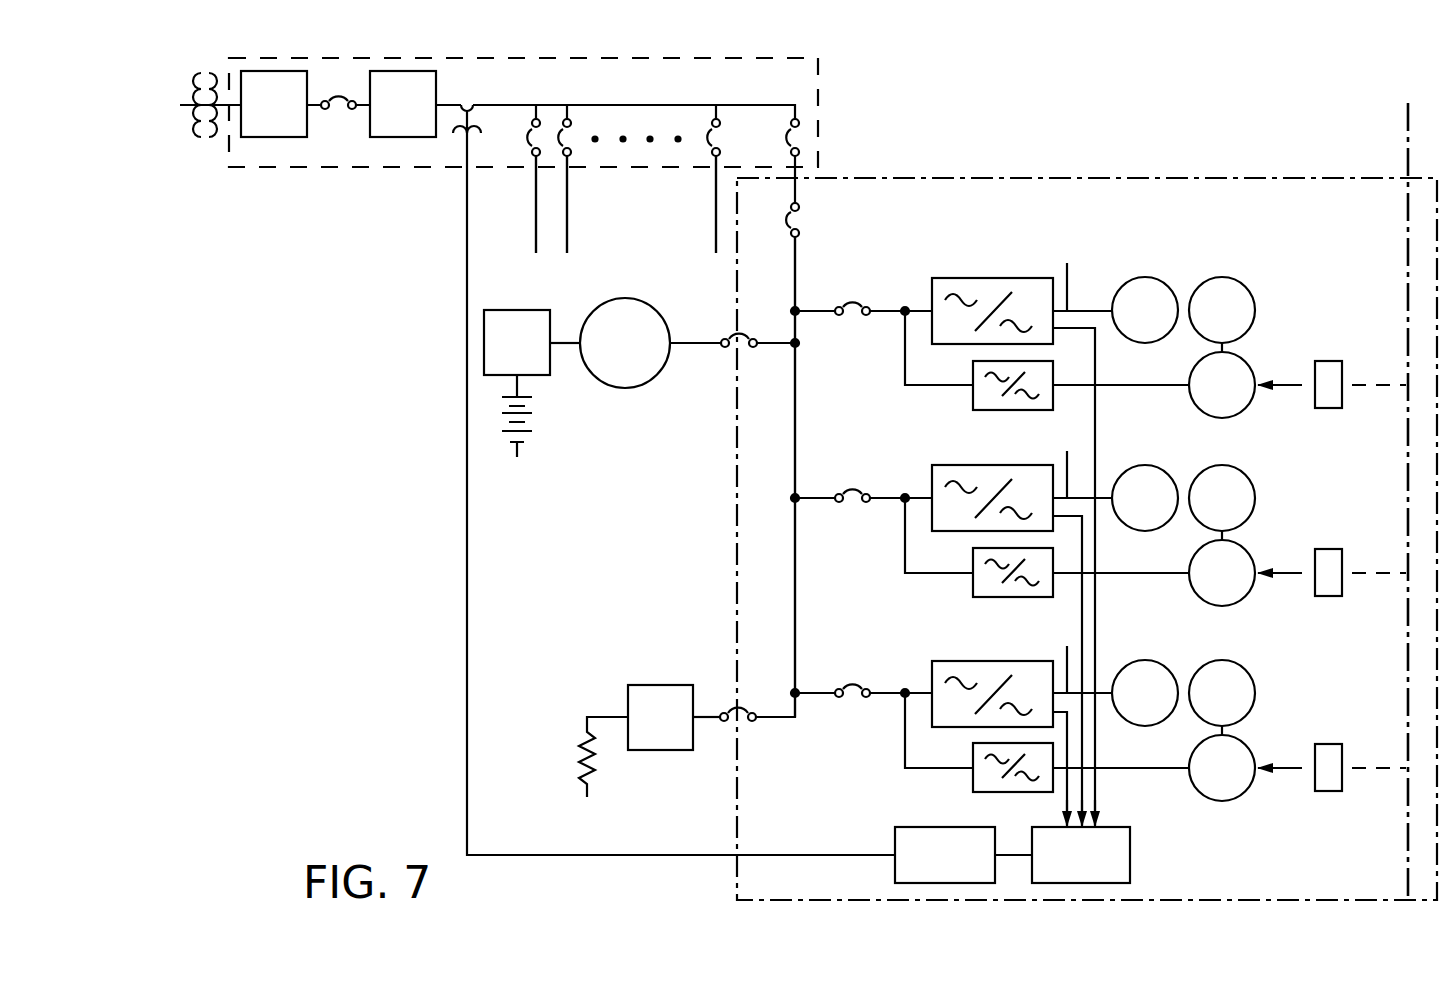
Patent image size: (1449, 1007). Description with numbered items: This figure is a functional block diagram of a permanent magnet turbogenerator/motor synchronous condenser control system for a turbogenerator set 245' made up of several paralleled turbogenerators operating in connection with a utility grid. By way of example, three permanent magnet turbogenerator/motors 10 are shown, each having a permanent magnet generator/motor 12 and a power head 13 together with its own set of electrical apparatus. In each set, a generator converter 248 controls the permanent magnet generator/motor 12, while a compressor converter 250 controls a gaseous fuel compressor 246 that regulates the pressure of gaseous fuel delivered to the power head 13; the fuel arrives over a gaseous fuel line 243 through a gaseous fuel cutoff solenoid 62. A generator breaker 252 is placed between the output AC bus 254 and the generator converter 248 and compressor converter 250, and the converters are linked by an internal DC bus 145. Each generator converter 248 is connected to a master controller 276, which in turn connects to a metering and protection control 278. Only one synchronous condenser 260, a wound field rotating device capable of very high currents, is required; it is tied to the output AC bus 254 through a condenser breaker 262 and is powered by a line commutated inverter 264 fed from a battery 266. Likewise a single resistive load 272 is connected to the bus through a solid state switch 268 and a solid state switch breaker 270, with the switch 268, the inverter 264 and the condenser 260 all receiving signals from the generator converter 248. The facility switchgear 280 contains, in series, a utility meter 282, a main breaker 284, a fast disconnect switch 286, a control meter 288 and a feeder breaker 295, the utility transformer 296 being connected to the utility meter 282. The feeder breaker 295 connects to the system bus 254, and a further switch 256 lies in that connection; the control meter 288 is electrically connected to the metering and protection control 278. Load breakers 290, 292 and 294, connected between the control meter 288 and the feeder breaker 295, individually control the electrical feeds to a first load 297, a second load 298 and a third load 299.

The permanent magnet turbogenerator/motor 10 is at (1184, 290).
The permanent magnet generator/motor 12 is at (1130, 325).
The power head 13 is at (1207, 325).
The gaseous fuel cutoff solenoid 62 is at (1326, 361).
The internal DC bus 145 is at (1067, 275).
The gaseous fuel line 243 is at (1405, 134).
The turbogenerator set 245' is at (1087, 507).
The gaseous fuel compressor 246 is at (1200, 400).
The generator converter 248 is at (996, 277).
The compressor converter 250 is at (986, 410).
The generator breaker 252 is at (855, 322).
The output AC bus 254 is at (798, 598).
The switch 256 is at (806, 217).
The synchronous condenser 260 is at (607, 358).
The condenser breaker 262 is at (726, 325).
The line commutated inverter 264 is at (499, 358).
The battery 266 is at (548, 426).
The solid state switch 268 is at (642, 732).
The solid state switch breaker 270 is at (726, 688).
The resistive load 272 is at (583, 755).
The master controller 276 is at (1063, 870).
The metering and protection control 278 is at (927, 870).
The facility switchgear 280 is at (615, 54).
The utility meter 282 is at (256, 119).
The main breaker 284 is at (340, 122).
The fast disconnect switch 286 is at (385, 119).
The control meter 288 is at (470, 100).
The load breaker 290 is at (517, 149).
The load breaker 292 is at (576, 142).
The load breaker 294 is at (703, 157).
The feeder breaker 295 is at (802, 140).
The utility transformer 296 is at (181, 132).
The first load 297 is at (536, 238).
The second load 298 is at (567, 239).
The third load 299 is at (716, 233).